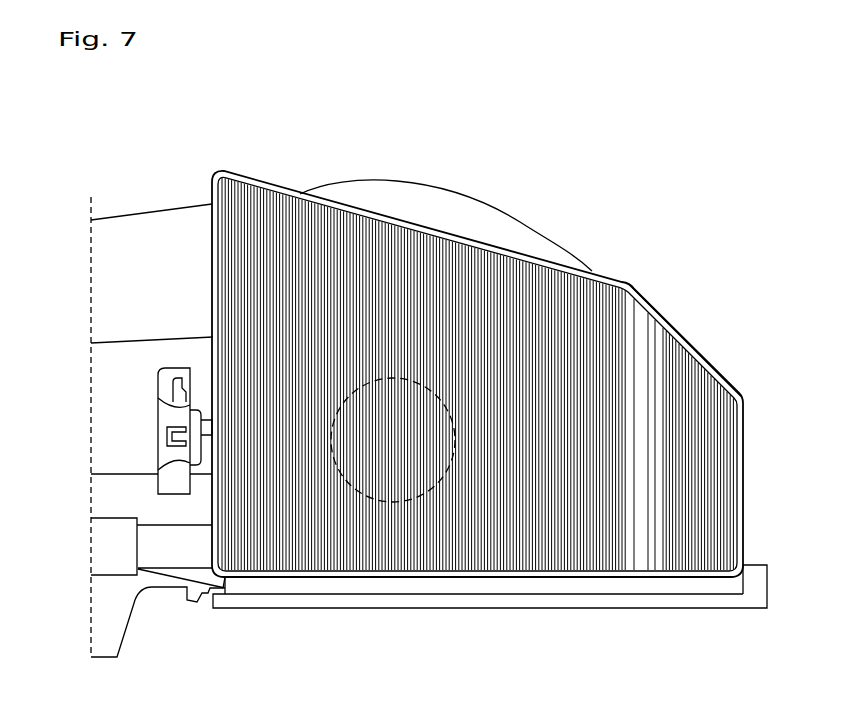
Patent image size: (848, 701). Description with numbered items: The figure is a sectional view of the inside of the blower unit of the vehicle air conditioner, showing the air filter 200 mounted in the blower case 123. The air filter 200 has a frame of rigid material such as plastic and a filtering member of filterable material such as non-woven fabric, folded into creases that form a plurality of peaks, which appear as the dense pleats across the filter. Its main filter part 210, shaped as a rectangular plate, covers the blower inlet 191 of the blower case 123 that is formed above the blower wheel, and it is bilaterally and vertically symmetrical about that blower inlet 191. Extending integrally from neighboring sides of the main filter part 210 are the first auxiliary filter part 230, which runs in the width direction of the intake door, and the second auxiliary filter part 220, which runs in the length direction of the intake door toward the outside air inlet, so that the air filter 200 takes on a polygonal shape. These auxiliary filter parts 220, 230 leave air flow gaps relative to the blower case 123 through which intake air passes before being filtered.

The blower case 123 is at (150, 258).
The air filter 200 is at (606, 255).
The second auxiliary filter part 220 is at (387, 233).
The first auxiliary filter part 230 is at (700, 390).
The main filter part 210 is at (335, 542).
The blower inlet 191 is at (398, 503).